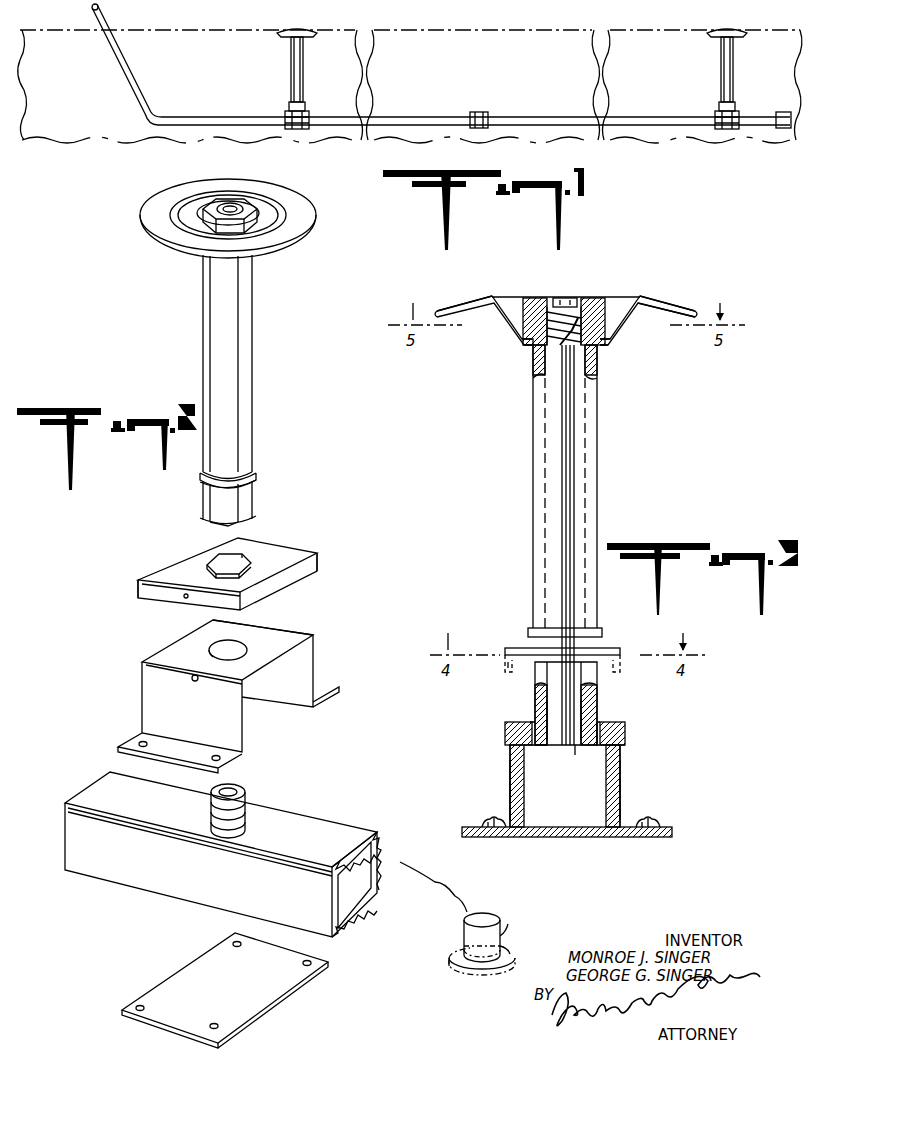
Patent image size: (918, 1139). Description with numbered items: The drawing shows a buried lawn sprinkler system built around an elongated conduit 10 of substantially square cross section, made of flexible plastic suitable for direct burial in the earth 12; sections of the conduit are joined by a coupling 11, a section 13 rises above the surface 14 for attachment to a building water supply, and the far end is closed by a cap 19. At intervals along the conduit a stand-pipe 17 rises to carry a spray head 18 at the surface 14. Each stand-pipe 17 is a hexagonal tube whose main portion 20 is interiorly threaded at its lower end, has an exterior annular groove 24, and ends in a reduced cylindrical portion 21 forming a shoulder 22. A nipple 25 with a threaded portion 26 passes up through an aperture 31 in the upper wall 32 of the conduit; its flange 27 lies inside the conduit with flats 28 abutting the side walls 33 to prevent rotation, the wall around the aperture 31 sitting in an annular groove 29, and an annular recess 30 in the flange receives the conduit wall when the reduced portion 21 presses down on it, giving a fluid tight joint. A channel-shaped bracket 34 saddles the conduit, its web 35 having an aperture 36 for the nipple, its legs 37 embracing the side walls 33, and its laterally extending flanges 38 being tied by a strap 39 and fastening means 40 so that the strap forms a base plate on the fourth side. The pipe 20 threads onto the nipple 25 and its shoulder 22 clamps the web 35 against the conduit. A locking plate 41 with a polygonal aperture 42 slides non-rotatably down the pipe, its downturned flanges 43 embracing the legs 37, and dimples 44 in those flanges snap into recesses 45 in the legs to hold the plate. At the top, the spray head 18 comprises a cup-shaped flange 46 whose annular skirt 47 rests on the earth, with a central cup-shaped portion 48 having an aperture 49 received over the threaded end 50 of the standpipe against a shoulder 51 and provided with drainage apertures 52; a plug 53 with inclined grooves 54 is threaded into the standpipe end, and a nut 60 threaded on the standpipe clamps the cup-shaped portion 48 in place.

In FIG. 1, the conduit 10 is at (190, 116).
In FIG. 2, the conduit 10 is at (332, 828).
In FIG. 3, the conduit 10 is at (622, 772).
In FIG. 1, the coupling 11 is at (483, 128).
In FIG. 1, the earth 12 is at (254, 73).
In FIG. 1, the section 13 is at (100, 7).
In FIG. 1, the surface 14 is at (224, 30).
In FIG. 1, the stand-pipe 17 is at (304, 78).
In FIG. 2, the stand-pipe 17 is at (256, 373).
In FIG. 3, the stand-pipe 17 is at (600, 496).
In FIG. 1, the spray head 18 is at (290, 32).
In FIG. 2, the spray head 18 is at (316, 212).
In FIG. 3, the spray head 18 is at (671, 310).
In FIG. 1, the cap 19 is at (786, 112).
In FIG. 2, the main portion 20 is at (203, 359).
In FIG. 3, the main portion 20 is at (533, 508).
In FIG. 2, the reduced cylindrical portion 21 is at (210, 526).
In FIG. 3, the reduced cylindrical portion 21 is at (604, 724).
In FIG. 2, the shoulder 22 is at (203, 506).
In FIG. 3, the shoulder 22 is at (530, 721).
In FIG. 2, the annular groove 24 is at (252, 479).
In FIG. 3, the annular groove 24 is at (599, 642).
In FIG. 2, the nipple 25 is at (248, 794).
In FIG. 3, the nipple 25 is at (600, 688).
In FIG. 2, the threaded portion 26 is at (246, 810).
In FIG. 3, the threaded portion 26 is at (597, 690).
In FIG. 2, the flange 27 is at (512, 958).
In FIG. 3, the flange 27 is at (626, 743).
In FIG. 2, the flats 28 is at (452, 965).
In FIG. 2, the annular groove 29 is at (502, 940).
In FIG. 3, the annular groove 29 is at (573, 752).
In FIG. 2, the annular recess 30 is at (509, 950).
In FIG. 3, the annular recess 30 is at (541, 748).
In FIG. 2, the aperture 31 is at (246, 822).
In FIG. 2, the wall 32 is at (372, 834).
In FIG. 2, the side walls 33 is at (378, 864).
In FIG. 3, the side walls 33 is at (510, 784).
In FIG. 1, the bracket 34 is at (308, 111).
In FIG. 2, the bracket 34 is at (317, 638).
In FIG. 3, the bracket 34 is at (508, 794).
In FIG. 2, the web 35 is at (284, 628).
In FIG. 2, the aperture 36 is at (234, 640).
In FIG. 2, the legs 37 is at (316, 666).
In FIG. 2, the flanges 38 is at (338, 692).
In FIG. 3, the flanges 38 is at (470, 821).
In FIG. 2, the strap 39 is at (284, 994).
In FIG. 3, the strap 39 is at (586, 838).
In FIG. 3, the fastening means 40 is at (650, 818).
In FIG. 2, the locking plate 41 is at (300, 548).
In FIG. 3, the locking plate 41 is at (505, 648).
In FIG. 2, the polygonal aperture 42 is at (242, 554).
In FIG. 2, the flanges 43 is at (320, 560).
In FIG. 3, the flanges 43 is at (627, 728).
In FIG. 2, the dimples 44 is at (186, 598).
In FIG. 3, the dimples 44 is at (499, 680).
In FIG. 2, the recesses 45 is at (192, 680).
In FIG. 3, the cup-shaped flange 46 is at (643, 308).
In FIG. 3, the annular skirt 47 is at (670, 308).
In FIG. 3, the cup-shaped portion 48 is at (608, 342).
In FIG. 3, the aperture 49 is at (521, 345).
In FIG. 3, the threaded end 50 is at (519, 300).
In FIG. 3, the shoulder 51 is at (597, 345).
In FIG. 3, the drainage apertures 52 is at (496, 309).
In FIG. 3, the plug 53 is at (531, 300).
In FIG. 3, the inclined grooves 54 is at (564, 335).
In FIG. 3, the nut 60 is at (598, 308).